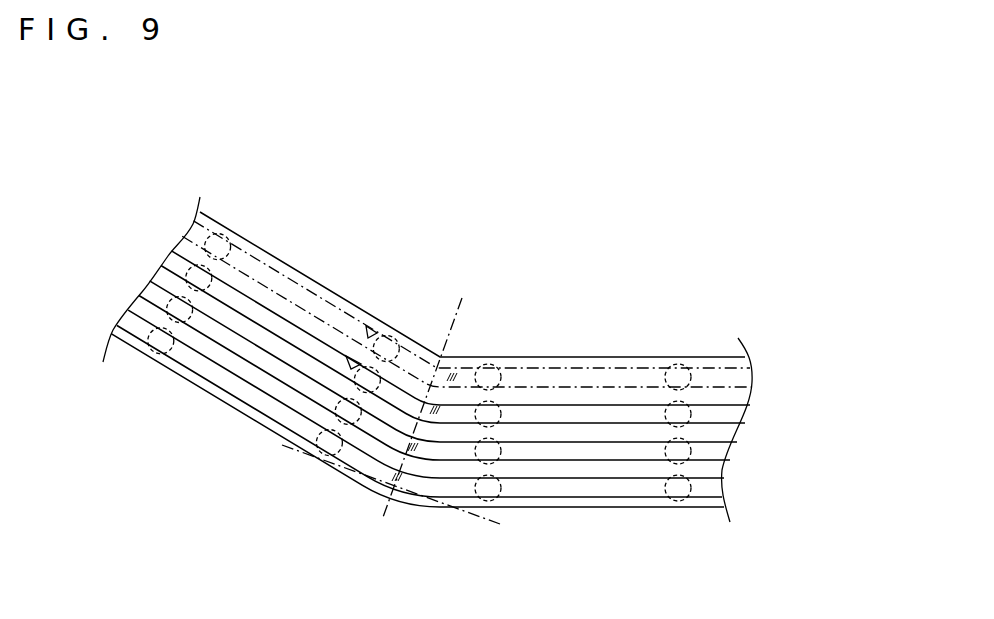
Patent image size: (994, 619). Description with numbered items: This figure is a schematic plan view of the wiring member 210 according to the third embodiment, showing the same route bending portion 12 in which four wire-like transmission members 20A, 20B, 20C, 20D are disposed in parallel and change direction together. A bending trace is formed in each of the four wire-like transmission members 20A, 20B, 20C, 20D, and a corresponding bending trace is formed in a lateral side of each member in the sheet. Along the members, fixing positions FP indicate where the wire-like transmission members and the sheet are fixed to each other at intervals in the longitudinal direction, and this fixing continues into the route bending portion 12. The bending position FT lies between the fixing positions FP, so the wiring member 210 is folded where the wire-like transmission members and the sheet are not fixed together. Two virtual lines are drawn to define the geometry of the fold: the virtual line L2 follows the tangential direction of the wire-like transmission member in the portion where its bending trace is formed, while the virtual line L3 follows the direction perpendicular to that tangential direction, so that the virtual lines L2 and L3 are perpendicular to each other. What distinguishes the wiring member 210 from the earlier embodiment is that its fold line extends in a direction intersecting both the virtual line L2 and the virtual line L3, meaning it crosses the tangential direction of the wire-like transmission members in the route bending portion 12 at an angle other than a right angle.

The wiring member 210 is at (284, 210).
The same route bending portion 12 is at (447, 353).
The wire-like transmission member 20A is at (551, 488).
The wire-like transmission member 20B is at (607, 452).
The wire-like transmission member 20C is at (573, 413).
The wire-like transmission member 20D is at (637, 380).
The virtual line L2 is at (478, 514).
The virtual line L3 is at (442, 318).
The fixing position FP is at (346, 356).
The bending position FT is at (433, 514).